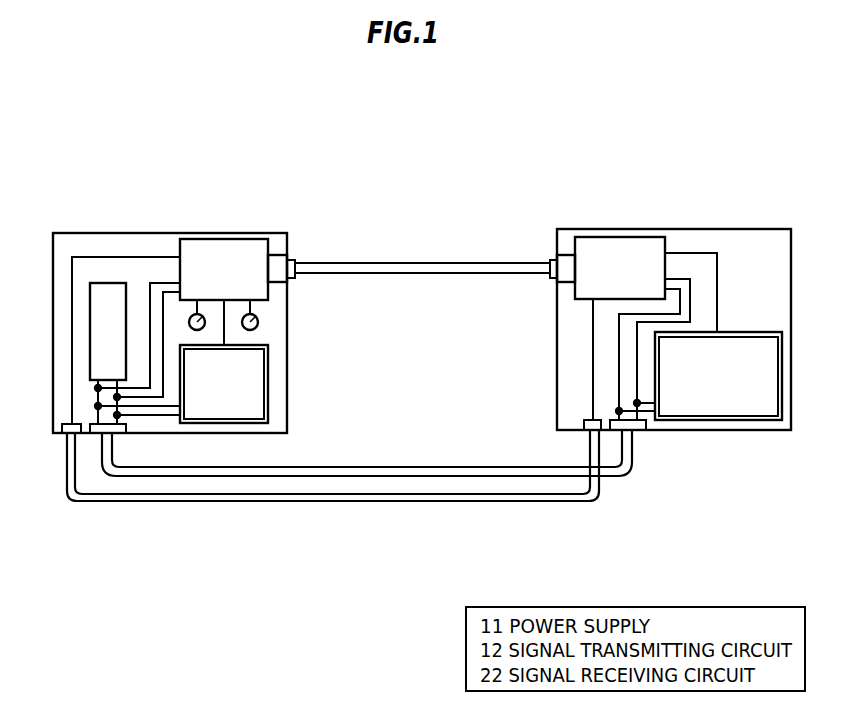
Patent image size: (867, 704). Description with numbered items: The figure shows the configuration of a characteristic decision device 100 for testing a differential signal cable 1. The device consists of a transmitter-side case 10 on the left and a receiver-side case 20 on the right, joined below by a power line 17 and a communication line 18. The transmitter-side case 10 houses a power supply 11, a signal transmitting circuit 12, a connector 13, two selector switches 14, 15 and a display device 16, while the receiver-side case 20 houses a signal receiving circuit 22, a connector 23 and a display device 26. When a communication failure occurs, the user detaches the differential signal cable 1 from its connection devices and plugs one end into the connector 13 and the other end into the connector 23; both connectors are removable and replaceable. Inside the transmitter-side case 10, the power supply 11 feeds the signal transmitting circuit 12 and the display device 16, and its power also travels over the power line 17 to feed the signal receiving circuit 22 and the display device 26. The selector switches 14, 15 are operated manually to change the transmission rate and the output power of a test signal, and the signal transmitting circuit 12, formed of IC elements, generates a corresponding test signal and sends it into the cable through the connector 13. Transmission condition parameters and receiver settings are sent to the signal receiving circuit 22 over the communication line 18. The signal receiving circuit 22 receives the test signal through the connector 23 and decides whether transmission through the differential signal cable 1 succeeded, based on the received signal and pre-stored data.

The characteristic decision device 100 is at (597, 130).
The differential signal cable 1 is at (421, 263).
The transmitter-side case 10 is at (156, 233).
The power supply 11 is at (112, 283).
The signal transmitting circuit 12 is at (227, 239).
The connector 13 is at (280, 255).
The selector switch 14 is at (205, 326).
The selector switch 15 is at (258, 315).
The display device 16 is at (268, 380).
The power line 17 is at (358, 464).
The communication line 18 is at (320, 502).
The receiver-side case 20 is at (711, 229).
The signal receiving circuit 22 is at (623, 237).
The connector 23 is at (577, 221).
The display device 26 is at (670, 430).